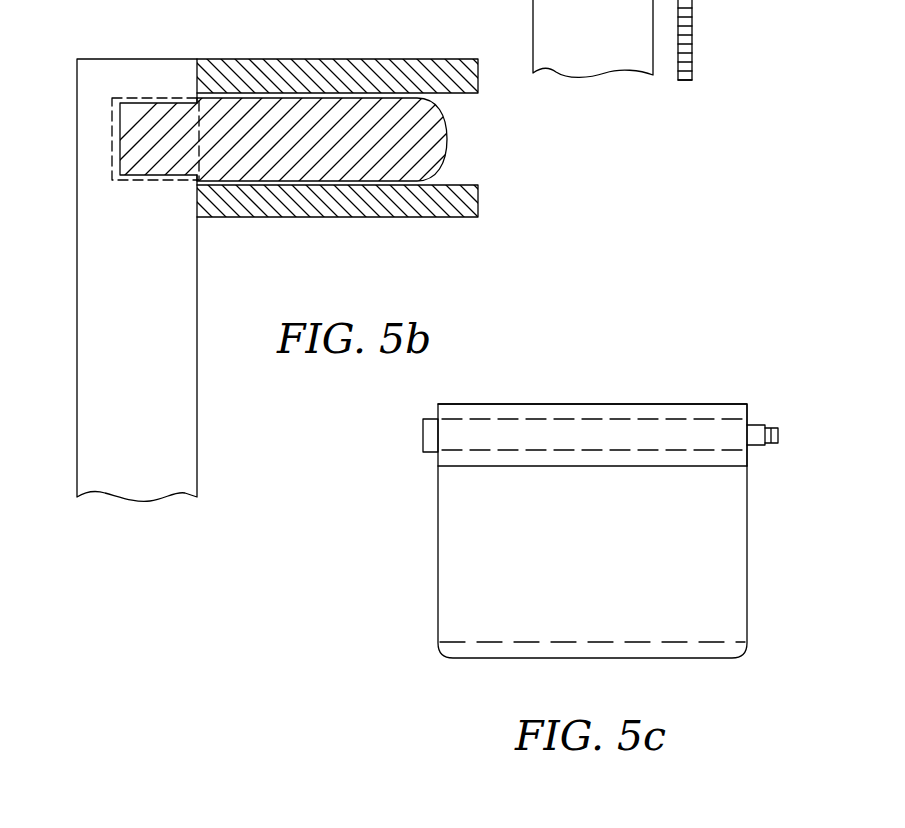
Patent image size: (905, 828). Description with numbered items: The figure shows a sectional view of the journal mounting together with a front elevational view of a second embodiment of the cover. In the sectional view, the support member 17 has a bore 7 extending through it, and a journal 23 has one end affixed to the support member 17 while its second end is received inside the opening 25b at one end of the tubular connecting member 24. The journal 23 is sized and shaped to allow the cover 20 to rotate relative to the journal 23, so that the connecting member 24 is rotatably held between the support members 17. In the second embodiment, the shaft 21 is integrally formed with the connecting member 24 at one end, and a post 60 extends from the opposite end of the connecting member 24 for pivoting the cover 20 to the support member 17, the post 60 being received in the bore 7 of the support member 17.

In FIG. 5b, the support member 17 is at (147, 68).
In FIG. 5b, the bore 7 is at (120, 152).
In FIG. 5b, the connecting member 24 is at (437, 72).
In FIG. 5c, the connecting member 24 is at (605, 404).
In FIG. 5b, the opening 25b is at (306, 87).
In FIG. 5b, the journal 23 is at (360, 168).
In FIG. 5c, the cover 20 is at (659, 552).
In FIG. 5c, the post 60 is at (423, 438).
In FIG. 5c, the shaft 21 is at (753, 424).